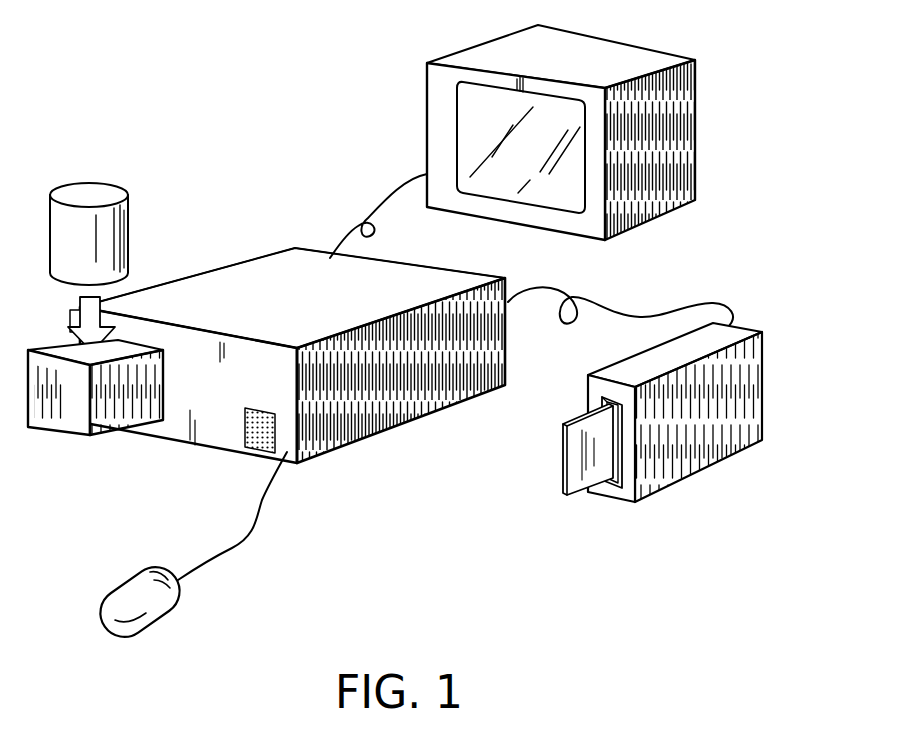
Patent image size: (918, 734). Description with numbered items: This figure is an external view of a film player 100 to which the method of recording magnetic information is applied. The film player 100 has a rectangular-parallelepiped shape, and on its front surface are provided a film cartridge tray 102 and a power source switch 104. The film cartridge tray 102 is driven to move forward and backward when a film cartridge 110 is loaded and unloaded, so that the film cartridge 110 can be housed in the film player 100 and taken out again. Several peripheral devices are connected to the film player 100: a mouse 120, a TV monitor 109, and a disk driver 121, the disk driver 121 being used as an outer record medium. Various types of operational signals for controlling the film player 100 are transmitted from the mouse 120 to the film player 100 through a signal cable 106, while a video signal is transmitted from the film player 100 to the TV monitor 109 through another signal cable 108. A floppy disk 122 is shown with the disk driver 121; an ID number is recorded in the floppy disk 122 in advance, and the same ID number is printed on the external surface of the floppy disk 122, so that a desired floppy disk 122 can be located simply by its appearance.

The film player 100 is at (273, 274).
The film cartridge tray 102 is at (63, 412).
The power source switch 104 is at (241, 432).
The signal cable 106 is at (252, 536).
The signal cable 108 is at (390, 189).
The TV monitor 109 is at (460, 56).
The film cartridge 110 is at (78, 194).
The mouse 120 is at (110, 596).
The disk driver 121 is at (702, 455).
The floppy disk 122 is at (568, 459).